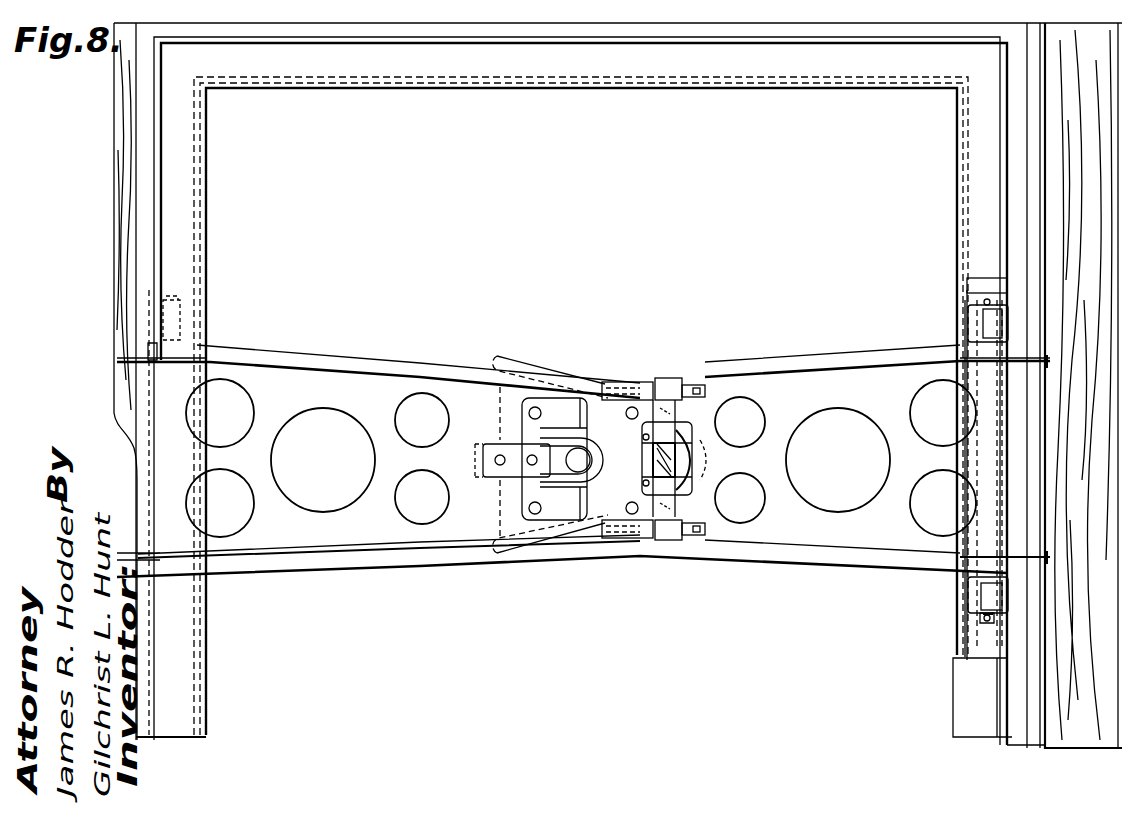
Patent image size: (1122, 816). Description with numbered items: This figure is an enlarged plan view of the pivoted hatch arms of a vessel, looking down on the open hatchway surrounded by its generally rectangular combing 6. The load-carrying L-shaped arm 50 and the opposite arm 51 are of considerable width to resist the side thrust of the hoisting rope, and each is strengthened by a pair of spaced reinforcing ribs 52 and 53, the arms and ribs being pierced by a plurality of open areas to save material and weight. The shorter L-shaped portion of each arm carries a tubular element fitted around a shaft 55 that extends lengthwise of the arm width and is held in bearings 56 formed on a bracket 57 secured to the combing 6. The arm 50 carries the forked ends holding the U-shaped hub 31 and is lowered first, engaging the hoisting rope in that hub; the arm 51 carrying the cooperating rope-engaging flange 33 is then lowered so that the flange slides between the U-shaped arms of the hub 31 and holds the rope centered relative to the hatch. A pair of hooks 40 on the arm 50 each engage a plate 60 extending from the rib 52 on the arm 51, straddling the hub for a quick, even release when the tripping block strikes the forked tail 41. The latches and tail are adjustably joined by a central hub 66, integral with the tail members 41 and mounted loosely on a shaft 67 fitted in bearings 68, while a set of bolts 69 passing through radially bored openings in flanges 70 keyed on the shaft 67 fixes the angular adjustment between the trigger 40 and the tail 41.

The combing 6 is at (967, 328).
The U-shaped hub 31 is at (593, 482).
The rope-engaging flange 33 is at (557, 457).
The hook 40 is at (678, 378).
The forked tail 41 is at (508, 360).
The load-carrying L-shaped arm 50 is at (841, 535).
The opposite arm 51 is at (384, 532).
The reinforcing rib 52 is at (316, 550).
The reinforcing rib 53 is at (365, 368).
The shaft 55 is at (980, 622).
The bearing 56 is at (993, 290).
The bracket 57 is at (973, 322).
The plate 60 is at (634, 382).
The central hub 66 is at (672, 458).
The shaft 67 is at (686, 496).
The bearing 68 is at (688, 500).
The bolt 69 is at (692, 483).
The flange 70 is at (645, 440).